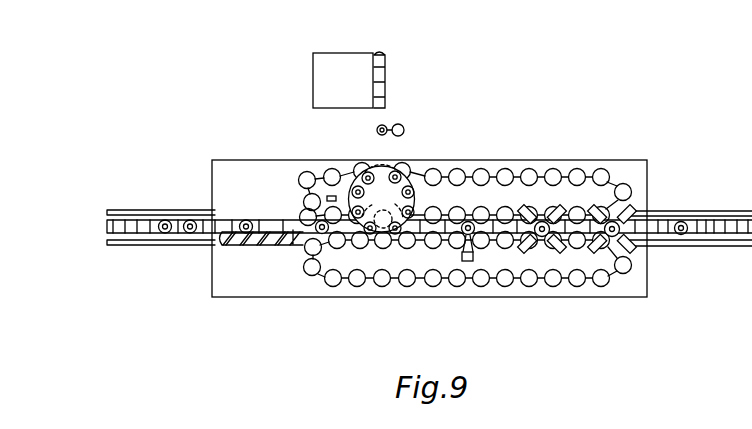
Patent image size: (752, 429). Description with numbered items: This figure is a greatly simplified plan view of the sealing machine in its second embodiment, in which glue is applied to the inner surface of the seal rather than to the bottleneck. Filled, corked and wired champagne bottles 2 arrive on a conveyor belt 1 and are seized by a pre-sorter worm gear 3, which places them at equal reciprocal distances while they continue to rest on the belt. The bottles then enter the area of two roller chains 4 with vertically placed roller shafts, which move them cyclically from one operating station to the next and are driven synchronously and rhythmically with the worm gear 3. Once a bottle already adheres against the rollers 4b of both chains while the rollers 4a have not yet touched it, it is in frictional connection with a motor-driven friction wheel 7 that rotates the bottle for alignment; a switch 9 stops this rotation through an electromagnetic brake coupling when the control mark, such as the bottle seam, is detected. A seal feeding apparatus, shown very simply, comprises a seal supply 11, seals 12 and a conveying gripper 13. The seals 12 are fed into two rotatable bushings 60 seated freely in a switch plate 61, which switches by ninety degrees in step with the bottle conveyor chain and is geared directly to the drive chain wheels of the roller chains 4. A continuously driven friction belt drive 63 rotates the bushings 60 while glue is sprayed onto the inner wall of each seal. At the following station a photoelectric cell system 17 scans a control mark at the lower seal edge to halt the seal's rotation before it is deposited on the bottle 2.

The conveyor belt 1 is at (125, 225).
The champagne bottles 2 is at (164, 222).
The pre-sorter worm gear 3 is at (228, 242).
The roller chains 4 is at (318, 273).
The rollers 4a is at (300, 175).
The rollers 4b is at (336, 169).
The friction wheel 7 is at (300, 213).
The switch 9 is at (330, 196).
The seal supply 11 is at (342, 68).
The seals 12 is at (386, 126).
The conveying gripper 13 is at (405, 128).
The photoelectric cell system 17 is at (468, 262).
The rotatable bushings 60 is at (414, 184).
The switch plate 61 is at (439, 177).
The friction belt drive 63 is at (398, 170).